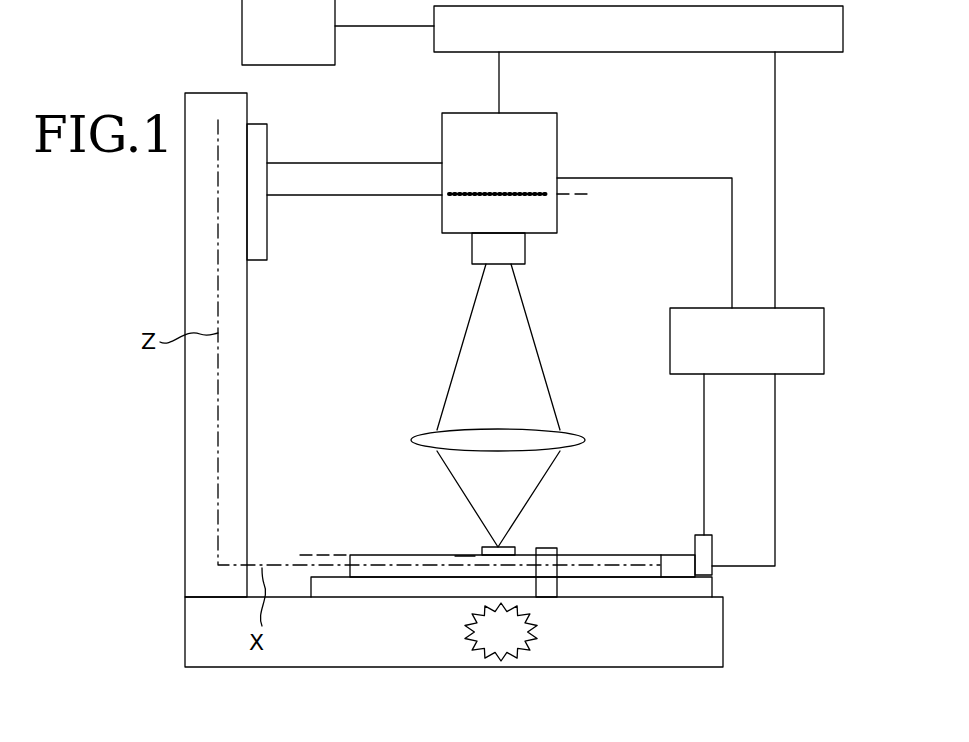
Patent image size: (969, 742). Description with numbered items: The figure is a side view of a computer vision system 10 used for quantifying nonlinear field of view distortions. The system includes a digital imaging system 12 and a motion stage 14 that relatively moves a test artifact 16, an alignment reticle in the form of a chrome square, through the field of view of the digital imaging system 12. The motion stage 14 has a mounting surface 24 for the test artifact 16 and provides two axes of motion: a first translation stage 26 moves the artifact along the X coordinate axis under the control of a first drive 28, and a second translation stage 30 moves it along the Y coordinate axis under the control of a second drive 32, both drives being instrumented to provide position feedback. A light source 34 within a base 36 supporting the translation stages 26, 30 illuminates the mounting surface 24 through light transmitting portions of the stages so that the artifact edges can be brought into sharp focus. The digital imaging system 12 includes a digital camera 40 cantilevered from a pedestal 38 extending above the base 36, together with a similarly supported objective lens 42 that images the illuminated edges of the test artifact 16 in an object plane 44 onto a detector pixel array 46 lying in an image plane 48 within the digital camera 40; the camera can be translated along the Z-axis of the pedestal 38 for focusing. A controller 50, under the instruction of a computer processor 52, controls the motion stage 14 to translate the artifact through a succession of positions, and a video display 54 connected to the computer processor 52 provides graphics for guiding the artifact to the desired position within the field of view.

The computer vision system 10 is at (160, 72).
The digital imaging system 12 is at (530, 262).
The motion stage 14 is at (402, 550).
The test artifact 16 is at (516, 553).
The mounting surface 24 is at (464, 555).
The first translation stage 26 is at (656, 564).
The first drive 28 is at (714, 553).
The second translation stage 30 is at (313, 592).
The second drive 32 is at (547, 585).
The light source 34 is at (478, 641).
The base 36 is at (204, 628).
The pedestal 38 is at (201, 490).
The digital camera 40 is at (512, 167).
The objective lens 42 is at (422, 438).
The object plane 44 is at (318, 552).
The detector pixel array 46 is at (466, 198).
The image plane 48 is at (570, 195).
The controller 50 is at (760, 350).
The computer processor 52 is at (633, 38).
The video display 54 is at (300, 38).